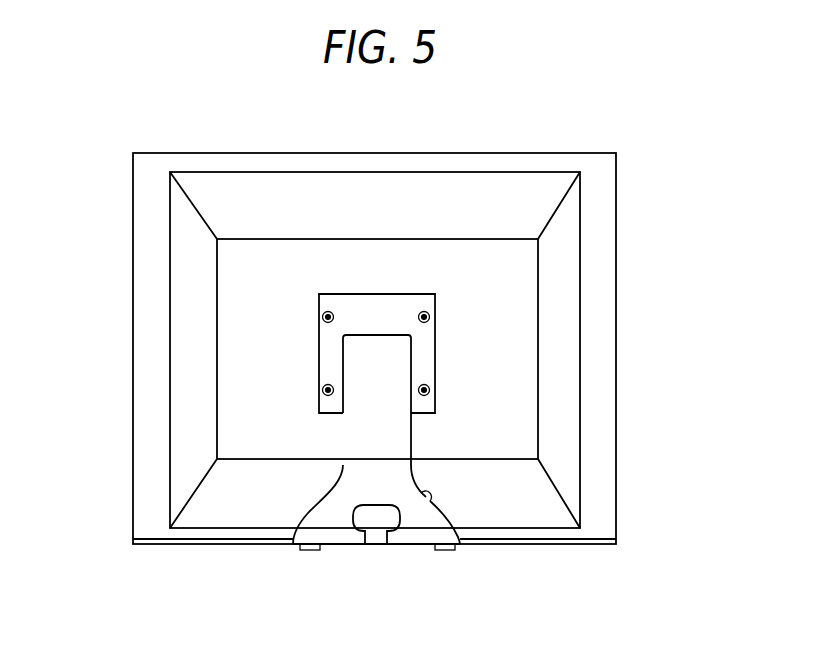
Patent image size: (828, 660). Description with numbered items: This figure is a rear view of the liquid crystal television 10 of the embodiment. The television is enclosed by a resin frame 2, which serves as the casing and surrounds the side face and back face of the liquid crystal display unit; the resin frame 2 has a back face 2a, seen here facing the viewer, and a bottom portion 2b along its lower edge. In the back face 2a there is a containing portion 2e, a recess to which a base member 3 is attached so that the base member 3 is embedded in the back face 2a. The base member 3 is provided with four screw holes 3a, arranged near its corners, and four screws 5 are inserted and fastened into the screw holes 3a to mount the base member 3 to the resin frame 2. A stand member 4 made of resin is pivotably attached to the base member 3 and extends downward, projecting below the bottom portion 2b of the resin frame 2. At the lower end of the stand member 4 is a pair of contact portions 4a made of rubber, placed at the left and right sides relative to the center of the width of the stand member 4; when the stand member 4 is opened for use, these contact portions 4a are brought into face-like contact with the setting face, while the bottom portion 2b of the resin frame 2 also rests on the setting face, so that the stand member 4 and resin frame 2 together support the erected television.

The liquid crystal television 10 is at (588, 139).
The resin frame 2 is at (607, 188).
The back face 2a is at (525, 277).
The bottom portion 2b is at (542, 545).
The containing portion 2e is at (430, 498).
The base member 3 is at (372, 302).
The screw holes 3a is at (323, 318).
The stand member 4 is at (358, 442).
The contact portion 4a is at (313, 550).
The screws 5 is at (322, 316).